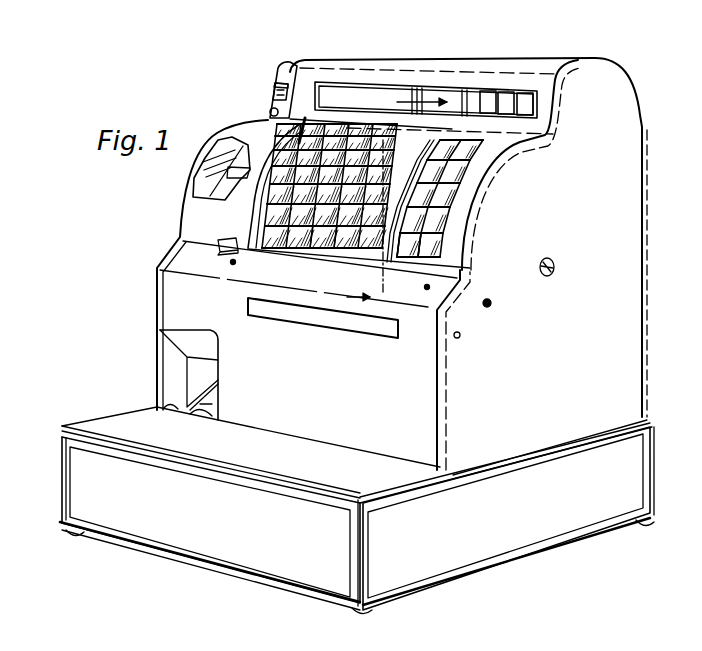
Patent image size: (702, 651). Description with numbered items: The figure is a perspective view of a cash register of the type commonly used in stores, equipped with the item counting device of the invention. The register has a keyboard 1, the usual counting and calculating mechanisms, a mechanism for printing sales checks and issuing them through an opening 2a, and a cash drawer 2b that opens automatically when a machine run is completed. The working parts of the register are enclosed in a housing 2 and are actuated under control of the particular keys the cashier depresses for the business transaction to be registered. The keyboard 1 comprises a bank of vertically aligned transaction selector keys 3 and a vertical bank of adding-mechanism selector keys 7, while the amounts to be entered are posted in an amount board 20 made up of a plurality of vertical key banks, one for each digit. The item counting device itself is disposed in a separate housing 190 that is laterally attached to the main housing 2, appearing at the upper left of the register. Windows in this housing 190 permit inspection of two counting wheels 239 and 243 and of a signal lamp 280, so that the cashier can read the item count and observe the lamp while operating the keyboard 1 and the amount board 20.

The keyboard 1 is at (407, 232).
The housing 2 is at (627, 372).
The opening 2a is at (187, 403).
The cash drawer 2b is at (72, 470).
The transaction selector keys 3 is at (403, 253).
The adding-mechanism selector keys 7 is at (427, 259).
The amount board 20 is at (318, 243).
The housing 190 is at (277, 68).
The counting wheel 239 is at (272, 86).
The counting wheel 243 is at (273, 97).
The signal lamp 280 is at (270, 112).